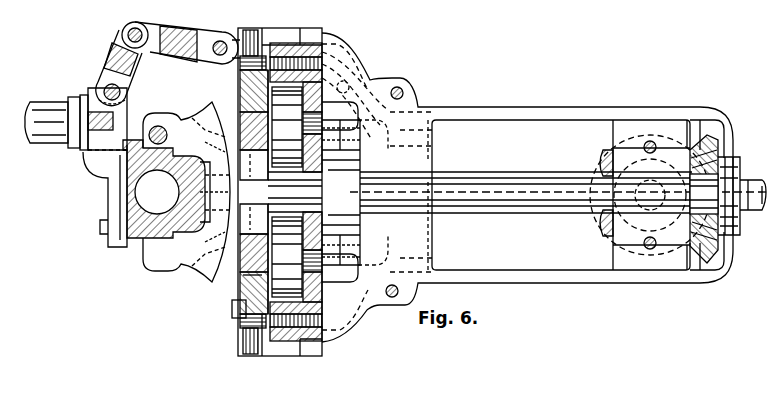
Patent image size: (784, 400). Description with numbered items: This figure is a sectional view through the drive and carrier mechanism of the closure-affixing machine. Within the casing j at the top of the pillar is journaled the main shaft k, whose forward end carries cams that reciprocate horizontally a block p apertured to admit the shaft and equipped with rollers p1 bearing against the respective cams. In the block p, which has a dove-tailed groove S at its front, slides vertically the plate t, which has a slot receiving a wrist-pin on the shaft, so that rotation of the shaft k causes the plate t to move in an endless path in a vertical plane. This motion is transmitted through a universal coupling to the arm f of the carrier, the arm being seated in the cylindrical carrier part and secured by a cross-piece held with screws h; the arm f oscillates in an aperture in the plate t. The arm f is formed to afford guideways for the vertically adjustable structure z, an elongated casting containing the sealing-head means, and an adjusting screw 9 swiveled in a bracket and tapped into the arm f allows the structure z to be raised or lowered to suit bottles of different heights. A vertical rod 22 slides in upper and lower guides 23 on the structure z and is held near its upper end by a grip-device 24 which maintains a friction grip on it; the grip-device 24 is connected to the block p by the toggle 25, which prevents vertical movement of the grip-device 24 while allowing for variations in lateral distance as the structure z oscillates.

The casing j is at (572, 283).
The main shaft k is at (516, 178).
The screws h is at (378, 170).
The dove-tailed groove S is at (250, 108).
The rollers p1 is at (318, 130).
The block p is at (232, 306).
The plate t is at (242, 280).
The adjusting screw 9 is at (160, 125).
The vertically adjustable structure z is at (160, 222).
The arm f is at (236, 236).
The guides 23 is at (96, 170).
The grip-device 24 is at (90, 95).
The vertical rod 22 is at (114, 120).
The toggle 25 is at (155, 52).